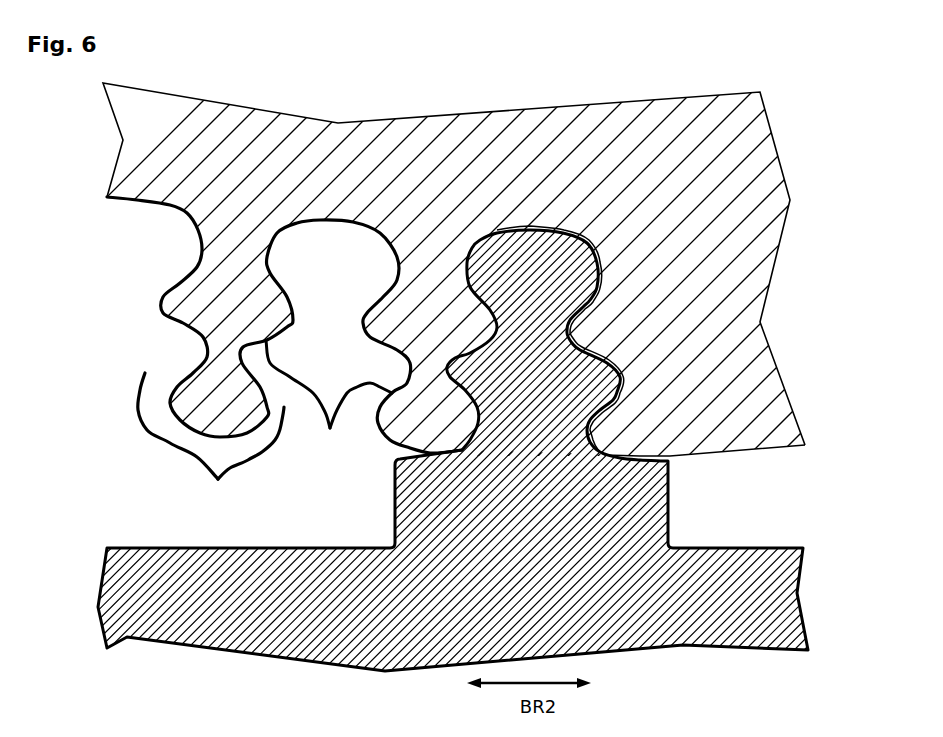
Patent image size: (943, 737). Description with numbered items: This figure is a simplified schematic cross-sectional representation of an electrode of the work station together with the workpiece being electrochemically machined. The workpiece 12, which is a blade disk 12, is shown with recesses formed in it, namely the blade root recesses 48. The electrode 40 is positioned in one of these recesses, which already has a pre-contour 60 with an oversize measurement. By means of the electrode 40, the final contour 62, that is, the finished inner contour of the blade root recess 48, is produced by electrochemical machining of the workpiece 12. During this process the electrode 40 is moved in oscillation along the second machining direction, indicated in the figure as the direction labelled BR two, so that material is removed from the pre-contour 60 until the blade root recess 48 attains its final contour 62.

The workpiece / blade disk 12 is at (748, 180).
The electrode 40 is at (613, 497).
The pre-contour 60 is at (582, 325).
The final contour 62 is at (330, 430).
The blade root recess 48 is at (211, 440).